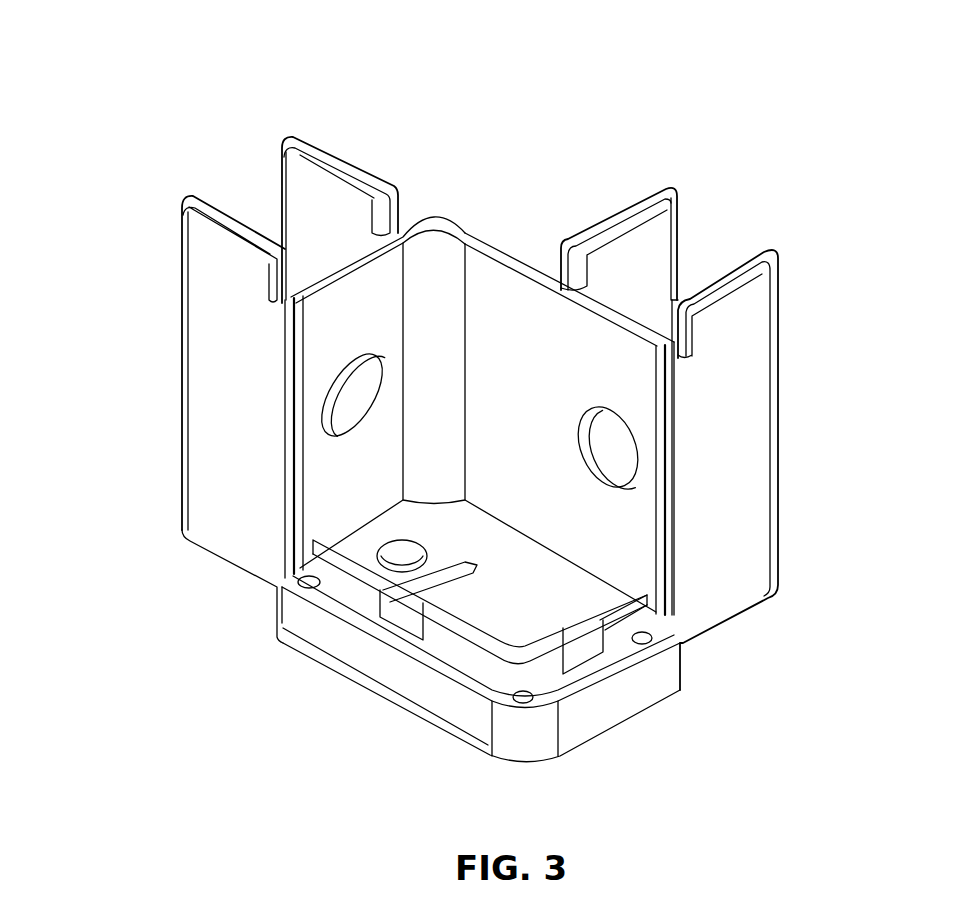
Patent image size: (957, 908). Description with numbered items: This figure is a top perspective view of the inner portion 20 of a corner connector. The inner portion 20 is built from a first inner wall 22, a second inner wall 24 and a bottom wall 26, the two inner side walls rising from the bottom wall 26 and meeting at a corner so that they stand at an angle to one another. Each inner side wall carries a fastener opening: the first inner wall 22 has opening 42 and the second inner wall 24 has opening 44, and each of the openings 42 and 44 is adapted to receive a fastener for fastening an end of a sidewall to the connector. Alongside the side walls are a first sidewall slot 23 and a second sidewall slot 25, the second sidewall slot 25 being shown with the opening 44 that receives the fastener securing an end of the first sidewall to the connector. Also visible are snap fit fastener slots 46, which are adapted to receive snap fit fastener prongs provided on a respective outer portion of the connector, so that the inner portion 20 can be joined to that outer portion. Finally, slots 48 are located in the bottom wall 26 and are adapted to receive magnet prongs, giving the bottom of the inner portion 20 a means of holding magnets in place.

The inner portion 20 is at (484, 148).
The first inner wall 22 is at (357, 468).
The first sidewall slot 23 is at (247, 187).
The second inner wall 24 is at (613, 520).
The second sidewall slot 25 is at (717, 232).
The bottom wall 26 is at (523, 593).
The opening 42 is at (333, 392).
The opening 44 is at (607, 443).
The snap fit fastener slots 46 is at (402, 637).
The slots 48 is at (470, 561).